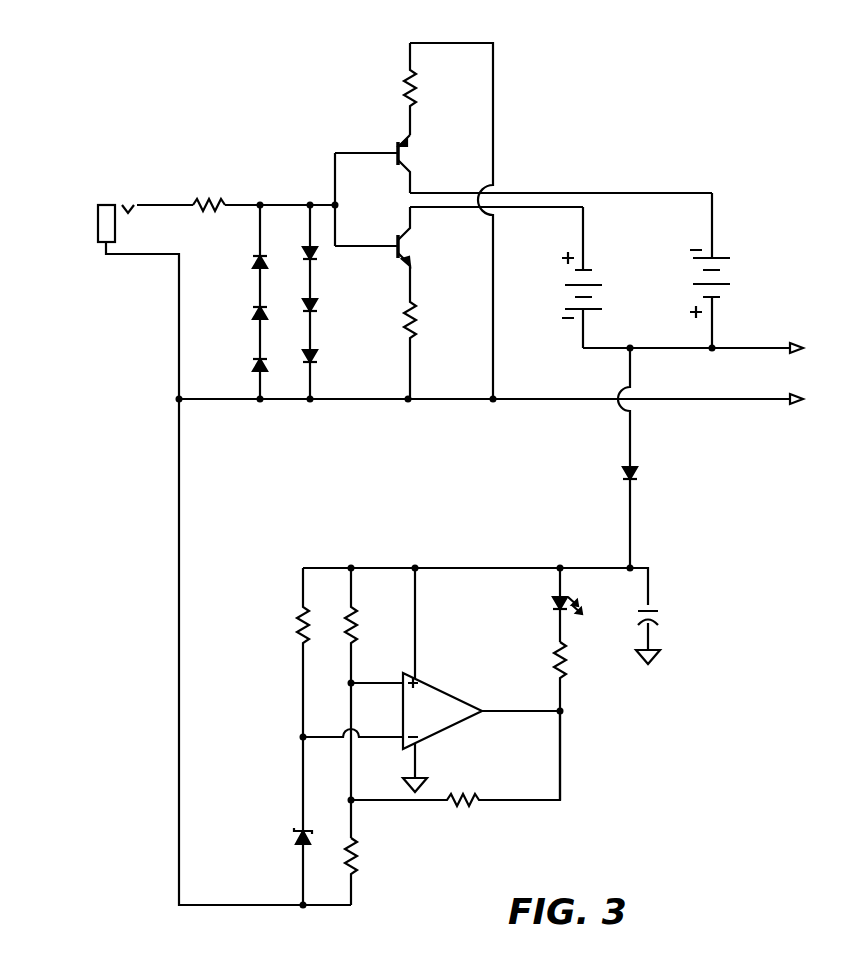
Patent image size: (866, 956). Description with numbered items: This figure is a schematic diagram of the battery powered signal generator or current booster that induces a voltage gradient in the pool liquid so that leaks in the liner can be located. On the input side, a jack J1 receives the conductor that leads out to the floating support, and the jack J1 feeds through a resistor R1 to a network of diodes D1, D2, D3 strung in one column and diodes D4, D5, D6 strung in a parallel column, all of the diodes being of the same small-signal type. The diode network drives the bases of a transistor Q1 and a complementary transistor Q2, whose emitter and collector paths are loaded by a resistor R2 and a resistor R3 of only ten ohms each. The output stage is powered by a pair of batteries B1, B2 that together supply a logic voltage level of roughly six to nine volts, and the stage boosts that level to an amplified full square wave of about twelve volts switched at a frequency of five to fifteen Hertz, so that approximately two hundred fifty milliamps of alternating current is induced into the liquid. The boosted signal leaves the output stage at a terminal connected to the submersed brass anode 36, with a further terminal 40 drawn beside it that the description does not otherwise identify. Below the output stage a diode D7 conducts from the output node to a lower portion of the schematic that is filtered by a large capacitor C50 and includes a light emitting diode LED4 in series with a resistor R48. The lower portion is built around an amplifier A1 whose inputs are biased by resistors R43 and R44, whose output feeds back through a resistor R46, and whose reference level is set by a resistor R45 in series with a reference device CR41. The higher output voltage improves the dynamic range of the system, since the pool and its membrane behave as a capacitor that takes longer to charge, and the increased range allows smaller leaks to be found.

The jack J1 is at (121, 225).
The resistor R1 is at (209, 193).
The diode D1 is at (246, 302).
The diode D2 is at (246, 315).
The diode D3 is at (246, 367).
The diode D4 is at (327, 302).
The diode D5 is at (327, 306).
The diode D6 is at (327, 357).
The transistor Q1 is at (420, 236).
The transistor Q2 is at (420, 164).
The resistor R2 is at (426, 332).
The resistor R3 is at (427, 89).
The battery B1 is at (598, 277).
The battery B2 is at (728, 270).
The output terminal 40 is at (812, 349).
The brass anode 36 is at (812, 400).
The diode D7 is at (648, 473).
The light emitting diode LED4 is at (535, 605).
The capacitor C50 is at (669, 633).
The resistor R43 is at (283, 697).
The resistor R44 is at (371, 703).
The resistor R48 is at (537, 721).
The amplifier A1 is at (431, 680).
The resistor R46 is at (455, 758).
The resistor R45 is at (372, 871).
The voltage reference CR41 is at (271, 864).